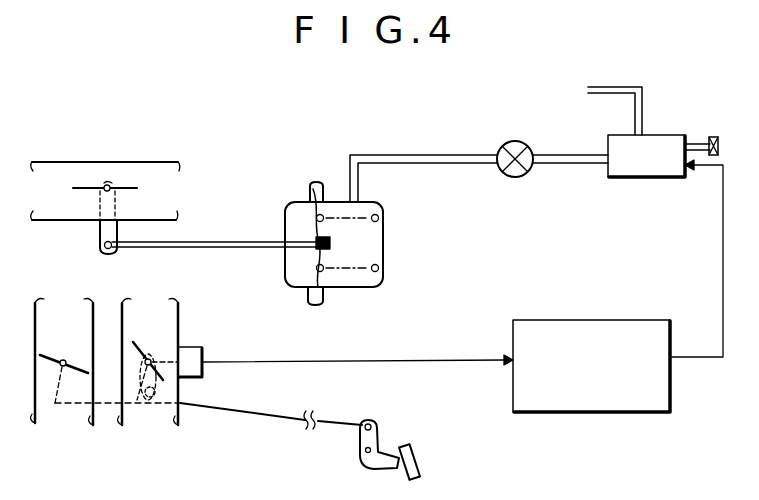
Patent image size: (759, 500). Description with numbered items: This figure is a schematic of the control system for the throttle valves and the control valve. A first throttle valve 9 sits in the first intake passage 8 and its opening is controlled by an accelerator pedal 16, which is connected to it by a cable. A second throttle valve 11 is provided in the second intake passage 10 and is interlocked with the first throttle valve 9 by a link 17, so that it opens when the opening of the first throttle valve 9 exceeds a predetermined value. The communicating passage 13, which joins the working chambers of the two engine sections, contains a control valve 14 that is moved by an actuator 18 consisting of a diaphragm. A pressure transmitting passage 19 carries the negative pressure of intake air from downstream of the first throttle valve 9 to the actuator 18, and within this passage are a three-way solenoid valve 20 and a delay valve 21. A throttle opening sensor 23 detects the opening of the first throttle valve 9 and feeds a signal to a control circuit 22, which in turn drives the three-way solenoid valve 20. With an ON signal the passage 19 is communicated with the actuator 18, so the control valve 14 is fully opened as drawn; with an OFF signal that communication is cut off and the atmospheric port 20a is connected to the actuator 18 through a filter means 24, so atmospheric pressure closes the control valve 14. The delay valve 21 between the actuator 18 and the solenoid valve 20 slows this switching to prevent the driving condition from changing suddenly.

The first intake passage 8 is at (180, 417).
The first throttle valve 9 is at (147, 357).
The second intake passage 10 is at (35, 423).
The second throttle valve 11 is at (52, 357).
The communicating passage 13 is at (78, 160).
The control valve 14 is at (130, 188).
The accelerator pedal 16 is at (418, 462).
The link 17 is at (112, 405).
The actuator 18 is at (291, 200).
The pressure transmitting passage 19 is at (622, 87).
The three-way solenoid valve 20 is at (658, 180).
The atmospheric port 20a is at (698, 137).
The delay valve 21 is at (502, 142).
The control circuit 22 is at (605, 413).
The throttle opening sensor 23 is at (200, 347).
The filter means 24 is at (718, 140).